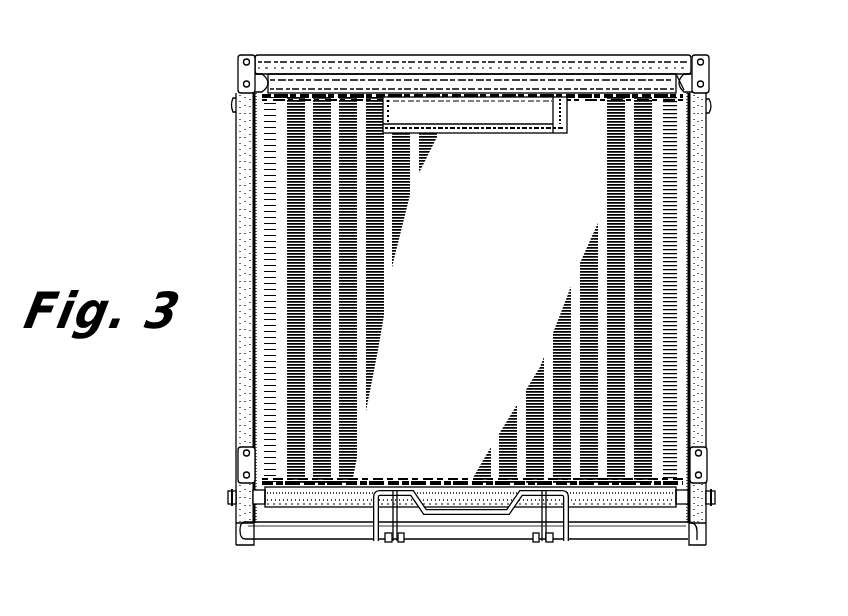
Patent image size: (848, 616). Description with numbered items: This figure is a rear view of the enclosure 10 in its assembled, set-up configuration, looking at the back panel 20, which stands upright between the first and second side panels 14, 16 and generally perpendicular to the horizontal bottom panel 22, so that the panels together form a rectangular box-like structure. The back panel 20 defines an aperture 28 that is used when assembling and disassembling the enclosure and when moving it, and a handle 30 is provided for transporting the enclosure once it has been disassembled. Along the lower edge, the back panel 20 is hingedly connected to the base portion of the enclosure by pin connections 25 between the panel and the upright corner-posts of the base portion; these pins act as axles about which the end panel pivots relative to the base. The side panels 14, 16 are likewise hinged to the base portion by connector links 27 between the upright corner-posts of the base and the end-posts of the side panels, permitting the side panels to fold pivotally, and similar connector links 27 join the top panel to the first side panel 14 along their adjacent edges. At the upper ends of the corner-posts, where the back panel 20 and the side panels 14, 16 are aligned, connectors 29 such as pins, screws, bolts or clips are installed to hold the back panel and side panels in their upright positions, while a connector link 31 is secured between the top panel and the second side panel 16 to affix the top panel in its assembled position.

The enclosure 10 is at (150, 63).
The first side panel 14 is at (236, 225).
The second side panel 16 is at (707, 363).
The back panel 20 is at (660, 315).
The bottom panel 22 is at (473, 46).
The pin connections 25 is at (228, 498).
The connector links 27 is at (240, 66).
The aperture 28 is at (500, 107).
The connectors 29 is at (232, 105).
The handle 30 is at (472, 516).
The connector link 31 is at (706, 66).